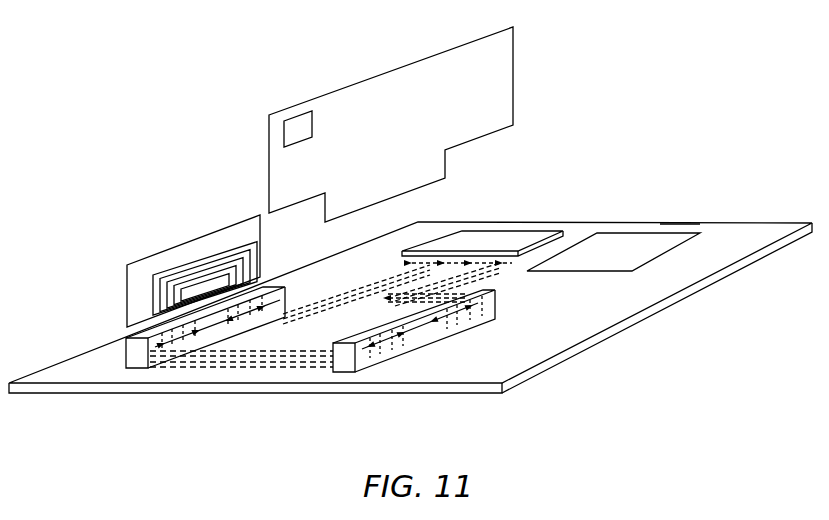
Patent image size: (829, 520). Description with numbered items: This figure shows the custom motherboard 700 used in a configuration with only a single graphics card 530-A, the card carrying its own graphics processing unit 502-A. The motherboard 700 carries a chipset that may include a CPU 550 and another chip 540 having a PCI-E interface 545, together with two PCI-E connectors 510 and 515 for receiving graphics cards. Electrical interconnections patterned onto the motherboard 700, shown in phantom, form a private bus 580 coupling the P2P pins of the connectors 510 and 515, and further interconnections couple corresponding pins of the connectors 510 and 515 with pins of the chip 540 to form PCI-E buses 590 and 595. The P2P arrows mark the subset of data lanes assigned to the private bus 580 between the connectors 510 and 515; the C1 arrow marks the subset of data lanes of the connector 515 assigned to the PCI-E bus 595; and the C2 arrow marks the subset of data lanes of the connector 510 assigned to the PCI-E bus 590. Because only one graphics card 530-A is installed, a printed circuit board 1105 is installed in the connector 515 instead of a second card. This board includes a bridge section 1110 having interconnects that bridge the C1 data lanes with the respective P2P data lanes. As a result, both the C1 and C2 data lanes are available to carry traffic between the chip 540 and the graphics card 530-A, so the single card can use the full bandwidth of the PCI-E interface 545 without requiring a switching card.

The custom motherboard 700 is at (592, 347).
The graphics card 530-A is at (513, 58).
The graphics processing unit 502-A is at (293, 115).
The printed circuit board 1105 is at (153, 255).
The bridge section 1110 is at (220, 248).
The PCI-E connector 515 is at (139, 368).
The PCI-E connector 510 is at (346, 374).
The chip 540 is at (500, 232).
The PCI-E interface 545 is at (590, 228).
The CPU 550 is at (673, 228).
The private bus 580 is at (210, 378).
The PCI-E bus 590 is at (382, 308).
The PCI-E bus 595 is at (270, 350).
The C1 arrow C1 is at (276, 302).
The C2 arrow C2 is at (501, 266).
The P2P arrows P2P is at (139, 367).